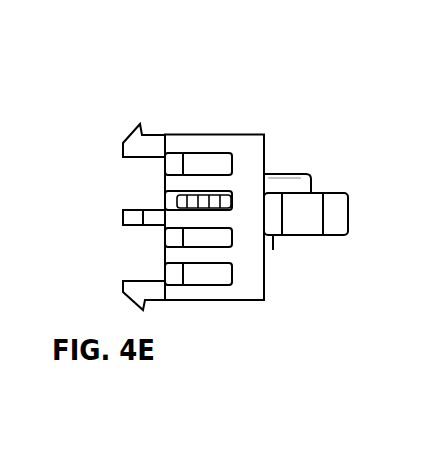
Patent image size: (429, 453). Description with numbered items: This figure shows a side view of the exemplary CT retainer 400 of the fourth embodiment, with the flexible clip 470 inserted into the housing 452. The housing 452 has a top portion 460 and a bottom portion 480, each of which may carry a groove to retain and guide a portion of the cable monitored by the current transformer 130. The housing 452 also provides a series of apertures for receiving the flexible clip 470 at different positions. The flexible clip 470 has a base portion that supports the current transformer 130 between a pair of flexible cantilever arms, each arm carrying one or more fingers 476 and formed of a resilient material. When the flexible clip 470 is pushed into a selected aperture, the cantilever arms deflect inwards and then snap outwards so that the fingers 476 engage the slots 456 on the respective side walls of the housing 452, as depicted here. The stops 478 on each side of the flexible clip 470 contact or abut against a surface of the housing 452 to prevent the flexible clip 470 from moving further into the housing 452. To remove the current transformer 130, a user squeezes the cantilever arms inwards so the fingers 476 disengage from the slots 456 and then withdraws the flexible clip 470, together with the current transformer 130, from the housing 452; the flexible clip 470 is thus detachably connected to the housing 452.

The connector assembly 400 is at (107, 118).
The housing 452 is at (198, 134).
The top portion 460 is at (230, 133).
The current transformer 130 is at (297, 188).
The fingers 476 is at (178, 200).
The slots 456 is at (183, 234).
The flexible clip 470 is at (335, 235).
The stop 478 is at (272, 236).
The bottom portion 480 is at (245, 292).